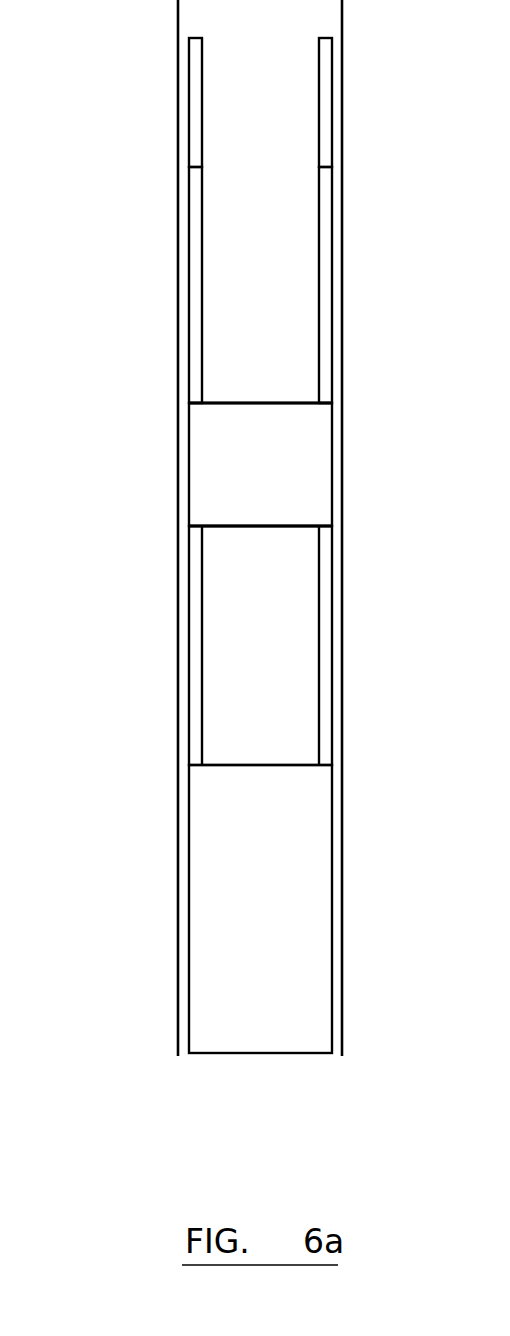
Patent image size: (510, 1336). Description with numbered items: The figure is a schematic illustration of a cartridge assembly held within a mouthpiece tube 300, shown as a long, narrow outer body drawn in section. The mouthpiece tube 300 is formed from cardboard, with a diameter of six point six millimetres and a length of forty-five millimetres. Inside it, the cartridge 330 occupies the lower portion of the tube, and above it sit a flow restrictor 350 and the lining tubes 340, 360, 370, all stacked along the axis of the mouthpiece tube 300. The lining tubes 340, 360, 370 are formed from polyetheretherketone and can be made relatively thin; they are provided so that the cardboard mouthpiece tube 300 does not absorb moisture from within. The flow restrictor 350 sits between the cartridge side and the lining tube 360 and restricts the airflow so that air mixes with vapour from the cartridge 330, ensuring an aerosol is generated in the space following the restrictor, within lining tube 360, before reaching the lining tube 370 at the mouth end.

The mouthpiece tube 300 is at (343, 694).
The cartridge 330 is at (240, 924).
The lining tube 340 is at (195, 652).
The flow restrictor 350 is at (245, 476).
The lining tube 360 is at (195, 282).
The lining tube 370 is at (195, 113).